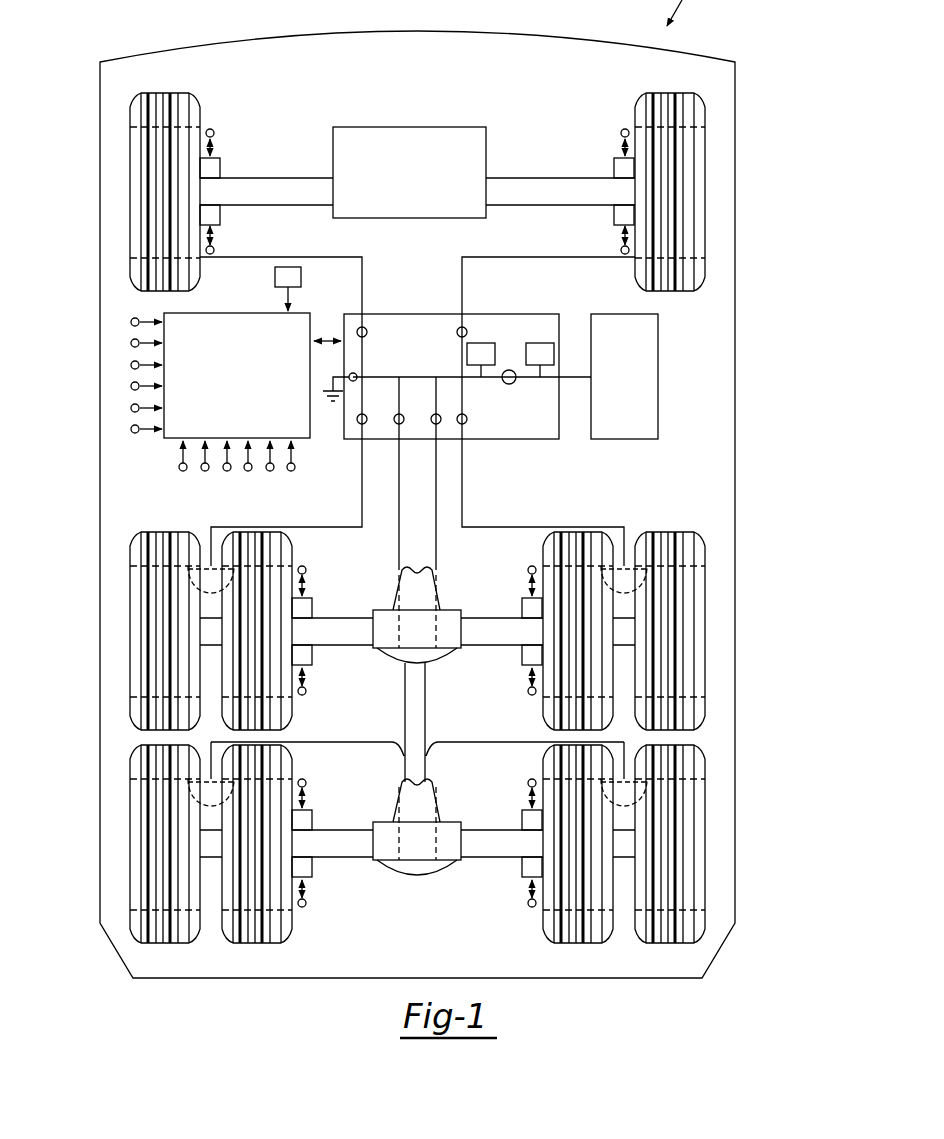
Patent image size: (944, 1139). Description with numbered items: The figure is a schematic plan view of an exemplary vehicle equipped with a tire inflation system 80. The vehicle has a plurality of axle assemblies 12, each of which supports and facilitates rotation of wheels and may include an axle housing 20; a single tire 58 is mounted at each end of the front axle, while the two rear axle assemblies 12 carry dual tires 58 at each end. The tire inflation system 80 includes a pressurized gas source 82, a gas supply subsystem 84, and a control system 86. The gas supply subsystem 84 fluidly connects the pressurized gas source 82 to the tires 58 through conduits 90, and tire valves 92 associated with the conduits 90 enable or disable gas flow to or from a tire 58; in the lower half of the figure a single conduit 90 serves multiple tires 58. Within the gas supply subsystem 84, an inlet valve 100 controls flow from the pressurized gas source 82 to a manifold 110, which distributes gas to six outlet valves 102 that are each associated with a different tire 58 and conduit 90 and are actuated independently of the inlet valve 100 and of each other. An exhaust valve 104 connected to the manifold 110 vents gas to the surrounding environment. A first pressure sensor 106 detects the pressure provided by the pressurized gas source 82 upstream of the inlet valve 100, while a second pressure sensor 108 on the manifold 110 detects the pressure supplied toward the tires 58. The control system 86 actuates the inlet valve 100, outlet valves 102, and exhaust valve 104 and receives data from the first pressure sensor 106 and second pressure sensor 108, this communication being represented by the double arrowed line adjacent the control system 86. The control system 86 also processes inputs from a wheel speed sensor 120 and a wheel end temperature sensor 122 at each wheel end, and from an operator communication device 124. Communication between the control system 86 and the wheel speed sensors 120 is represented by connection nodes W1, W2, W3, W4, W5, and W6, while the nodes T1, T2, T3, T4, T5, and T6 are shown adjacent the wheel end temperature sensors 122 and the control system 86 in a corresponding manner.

The axle assembly 12 is at (316, 176).
The axle housing 20 is at (411, 505).
The tire 58 is at (130, 112).
The tire inflation system 80 is at (126, 447).
The pressurized gas source 82 is at (638, 389).
The gas supply subsystem 84 is at (530, 311).
The control system 86 is at (250, 389).
The conduit 90 is at (461, 257).
The tire valve 92 is at (194, 259).
The inlet valve 100 is at (507, 385).
The outlet valve 102 is at (459, 328).
The exhaust valve 104 is at (352, 371).
The first pressure sensor 106 is at (540, 360).
The second pressure sensor 108 is at (481, 360).
The manifold 110 is at (428, 375).
The wheel speed sensor 120 is at (222, 166).
The wheel end temperature sensor 122 is at (222, 212).
The operator communication device 124 is at (289, 289).
The connection node W1 is at (167, 220).
The connection node W2 is at (368, 231).
The connection node W3 is at (213, 537).
The connection node W4 is at (324, 548).
The connection node W5 is at (212, 665).
The connection node W6 is at (323, 676).
The torque signal 1 T1 is at (214, 250).
The torque signal 2 T2 is at (621, 250).
The torque signal 3 T3 is at (227, 471).
The torque signal 4 T4 is at (248, 471).
The torque signal 5 T5 is at (270, 471).
The torque signal 6 T6 is at (295, 467).